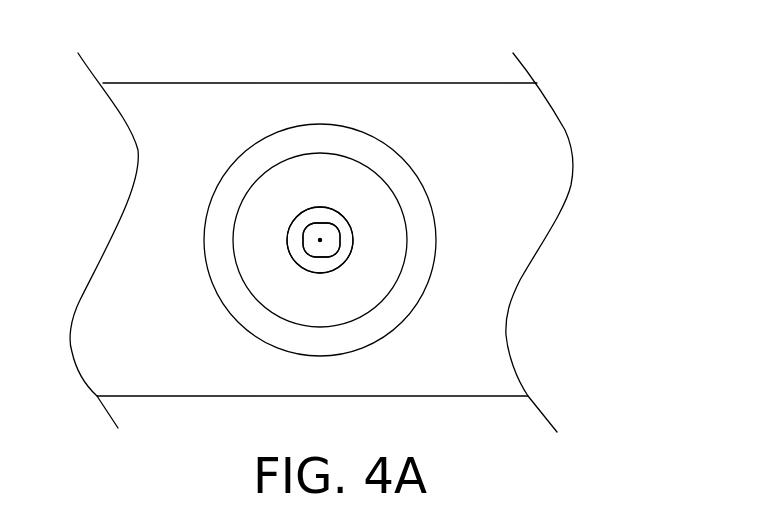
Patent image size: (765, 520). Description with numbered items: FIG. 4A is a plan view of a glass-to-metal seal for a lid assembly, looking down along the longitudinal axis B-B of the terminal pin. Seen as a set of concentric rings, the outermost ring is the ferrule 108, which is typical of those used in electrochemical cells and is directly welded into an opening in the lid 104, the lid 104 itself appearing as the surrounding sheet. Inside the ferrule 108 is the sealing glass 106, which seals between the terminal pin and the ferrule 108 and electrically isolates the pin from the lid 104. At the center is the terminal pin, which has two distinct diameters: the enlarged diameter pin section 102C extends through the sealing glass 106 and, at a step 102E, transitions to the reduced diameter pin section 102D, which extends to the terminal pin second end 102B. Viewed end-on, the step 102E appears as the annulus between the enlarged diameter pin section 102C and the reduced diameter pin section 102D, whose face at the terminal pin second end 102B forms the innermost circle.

The lid 104 is at (180, 100).
The sealing glass 106 is at (377, 223).
The ferrule 108 is at (219, 297).
The terminal pin second end 102B is at (317, 220).
The enlarged diameter pin section 102C is at (307, 271).
The reduced diameter pin section 102D is at (318, 222).
The step 102E is at (320, 258).
The longitudinal axis B-B is at (320, 240).